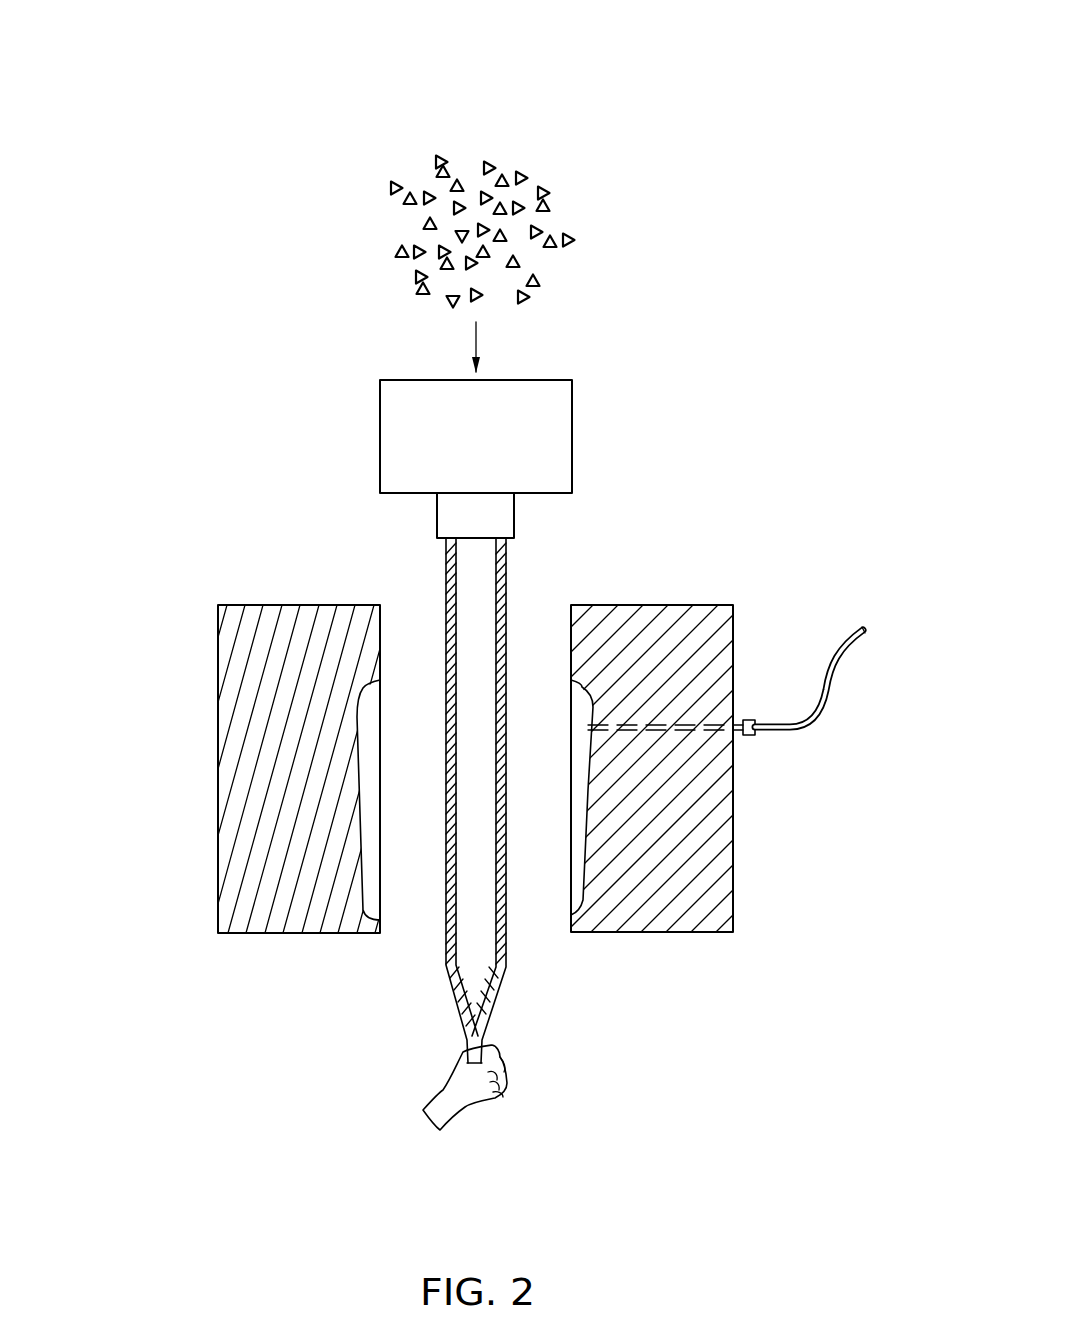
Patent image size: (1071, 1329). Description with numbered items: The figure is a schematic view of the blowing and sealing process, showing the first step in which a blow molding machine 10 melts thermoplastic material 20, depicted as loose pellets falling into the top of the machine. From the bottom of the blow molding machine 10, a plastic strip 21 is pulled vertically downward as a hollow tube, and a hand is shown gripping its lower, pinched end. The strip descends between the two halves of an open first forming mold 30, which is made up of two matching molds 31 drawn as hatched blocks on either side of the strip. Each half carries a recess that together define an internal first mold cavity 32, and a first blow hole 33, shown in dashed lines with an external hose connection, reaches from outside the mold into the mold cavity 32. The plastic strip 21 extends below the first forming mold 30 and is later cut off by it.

The blow molding machine 10 is at (356, 436).
The thermoplastic material 20 is at (573, 191).
The plastic strip 21 is at (506, 933).
The first forming mold 30 is at (225, 948).
The matching molds 31 is at (253, 780).
The first mold cavity 32 is at (580, 830).
The first blow hole 33 is at (672, 725).